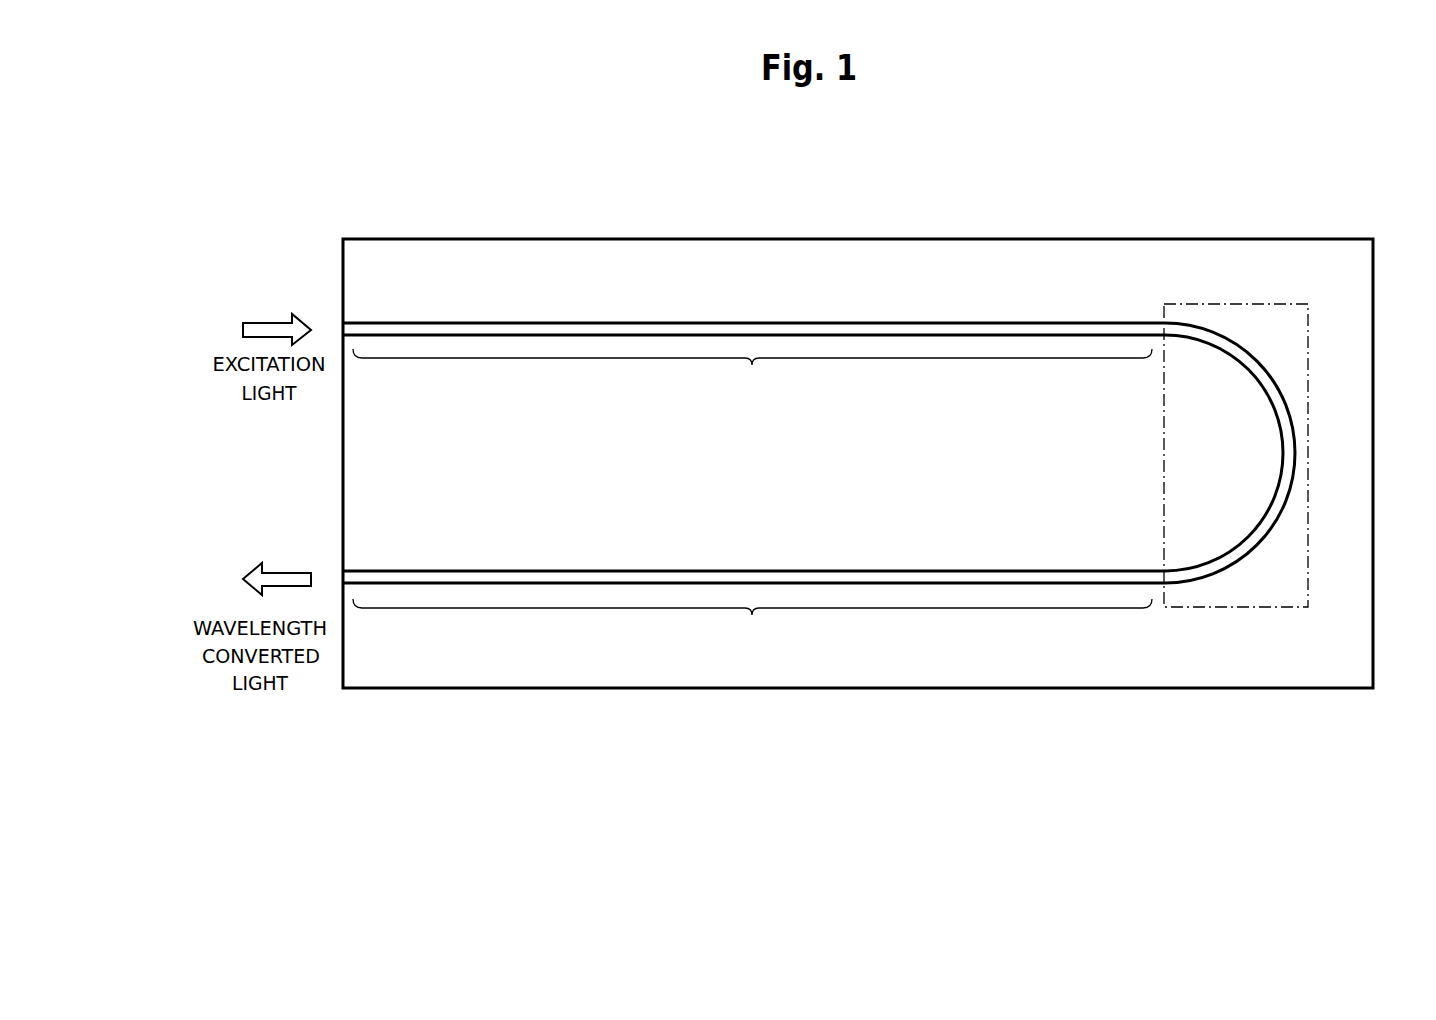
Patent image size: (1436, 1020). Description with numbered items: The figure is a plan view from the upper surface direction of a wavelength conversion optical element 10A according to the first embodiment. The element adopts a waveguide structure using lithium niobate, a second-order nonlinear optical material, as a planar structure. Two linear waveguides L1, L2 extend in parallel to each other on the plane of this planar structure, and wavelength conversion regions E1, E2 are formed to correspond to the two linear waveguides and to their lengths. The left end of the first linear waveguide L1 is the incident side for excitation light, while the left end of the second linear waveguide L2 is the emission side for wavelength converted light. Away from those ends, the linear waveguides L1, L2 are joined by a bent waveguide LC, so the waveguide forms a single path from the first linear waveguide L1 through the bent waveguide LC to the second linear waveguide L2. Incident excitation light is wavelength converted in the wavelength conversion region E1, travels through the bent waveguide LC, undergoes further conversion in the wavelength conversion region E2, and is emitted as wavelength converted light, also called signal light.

The wavelength conversion optical element 10A is at (875, 239).
The first linear waveguide L1 is at (833, 331).
The second linear waveguide L2 is at (849, 583).
The bent waveguide LC is at (1225, 302).
The wavelength conversion region E1 is at (752, 374).
The wavelength conversion region E2 is at (752, 624).